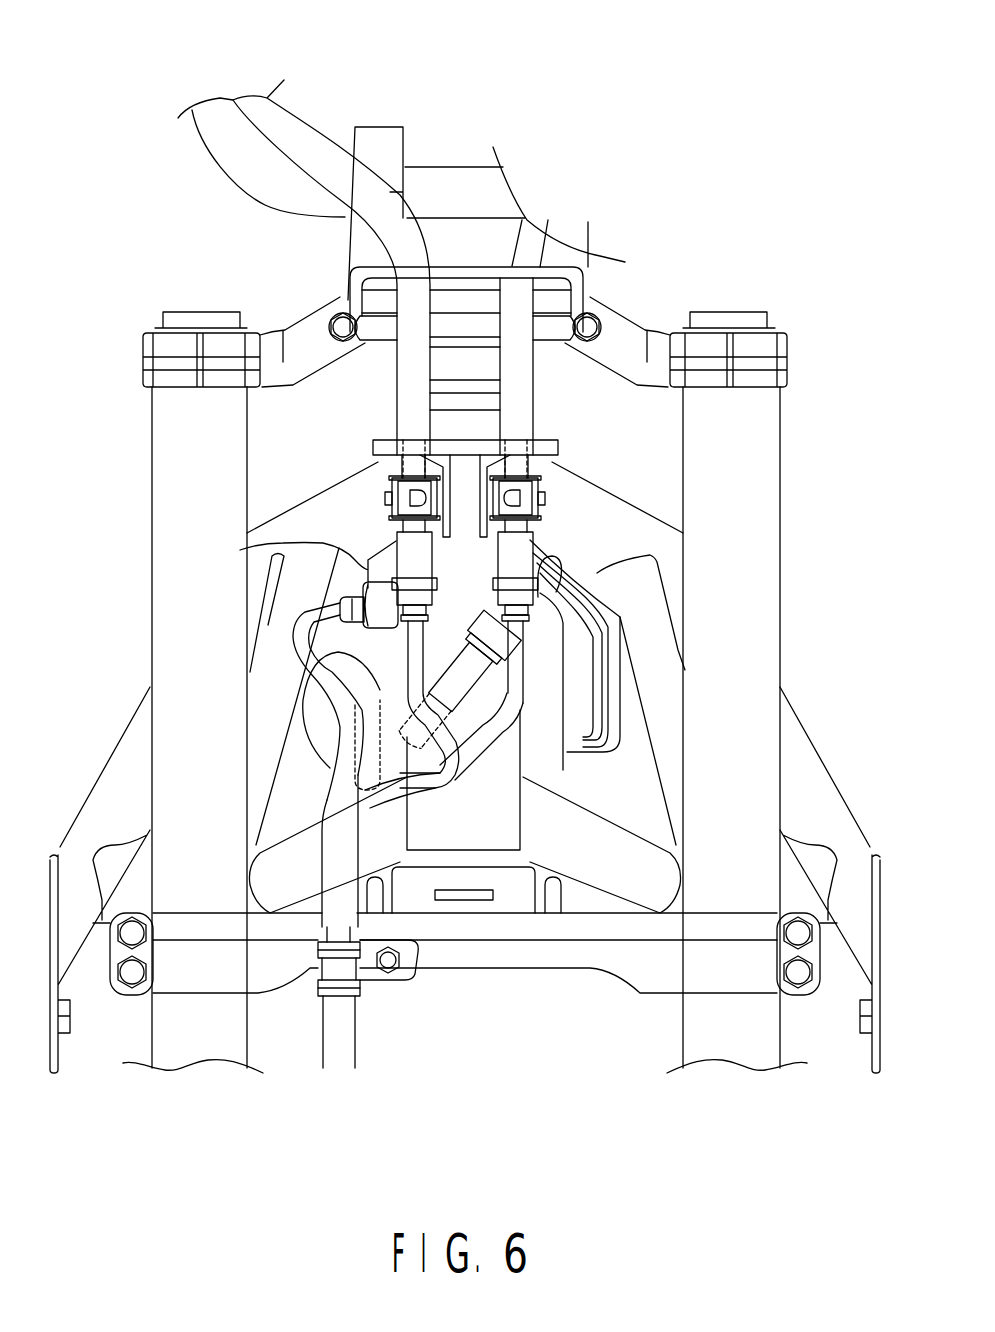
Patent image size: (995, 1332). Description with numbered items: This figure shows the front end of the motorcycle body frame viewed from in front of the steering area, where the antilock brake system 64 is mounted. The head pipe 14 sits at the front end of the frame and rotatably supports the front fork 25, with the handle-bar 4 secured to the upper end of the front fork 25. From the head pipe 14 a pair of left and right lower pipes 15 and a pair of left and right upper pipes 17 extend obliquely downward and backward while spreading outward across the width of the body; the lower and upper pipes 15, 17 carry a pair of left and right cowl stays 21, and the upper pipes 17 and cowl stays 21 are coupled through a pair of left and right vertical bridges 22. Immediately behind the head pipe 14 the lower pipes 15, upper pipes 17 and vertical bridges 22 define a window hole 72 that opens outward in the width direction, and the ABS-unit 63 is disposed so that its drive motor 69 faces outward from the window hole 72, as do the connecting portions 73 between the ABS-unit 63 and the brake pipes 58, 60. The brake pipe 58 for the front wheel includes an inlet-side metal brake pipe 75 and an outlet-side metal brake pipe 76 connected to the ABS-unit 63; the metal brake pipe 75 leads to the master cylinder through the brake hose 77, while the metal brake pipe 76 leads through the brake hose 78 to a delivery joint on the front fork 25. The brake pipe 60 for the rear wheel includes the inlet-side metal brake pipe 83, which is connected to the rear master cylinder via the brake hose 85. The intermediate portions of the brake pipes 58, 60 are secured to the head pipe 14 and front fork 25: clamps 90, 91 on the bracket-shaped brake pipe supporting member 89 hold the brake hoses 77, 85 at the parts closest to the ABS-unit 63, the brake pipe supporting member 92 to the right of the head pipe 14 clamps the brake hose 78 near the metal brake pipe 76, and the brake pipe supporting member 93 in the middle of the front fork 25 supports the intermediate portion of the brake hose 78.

The handle-bar 4 is at (210, 165).
The head pipe 14 is at (478, 830).
The lower pipes 15 is at (624, 890).
The upper pipes 17 is at (293, 515).
The cowl stays 21 is at (88, 785).
The vertical bridges 22 is at (268, 677).
The front fork 25 is at (137, 453).
The brake pipe 58 is at (253, 82).
The brake pipe 60 is at (550, 224).
The ABS-unit 63 is at (631, 615).
The antilock brake system 64 is at (708, 513).
The drive motor 69 is at (318, 725).
The window hole 72 is at (283, 613).
The connecting portions 73 is at (358, 565).
The metal brake pipe 75 is at (422, 645).
The metal brake pipe 76 is at (553, 570).
The brake hose 77 is at (298, 128).
The brake hose 78 is at (327, 787).
The metal brake pipe 83 is at (470, 767).
The brake hose 85 is at (527, 373).
The brake pipe supporting member 89 is at (460, 440).
The clamp 90 is at (387, 500).
The clamp 91 is at (543, 500).
The brake pipe supporting member 92 is at (445, 713).
The brake pipe supporting member 93 is at (318, 970).